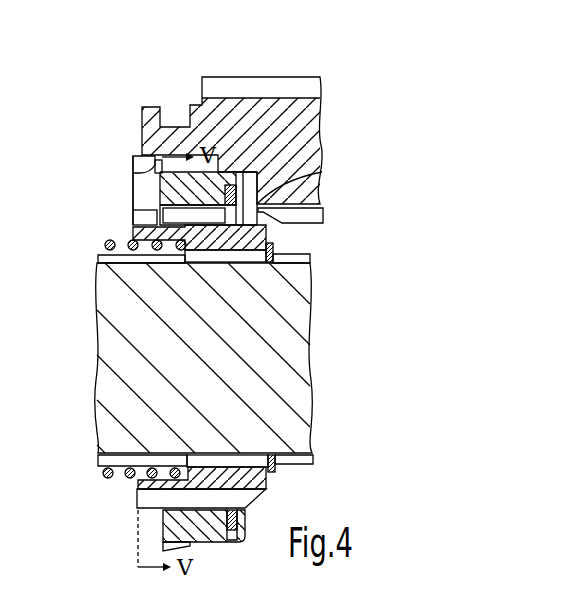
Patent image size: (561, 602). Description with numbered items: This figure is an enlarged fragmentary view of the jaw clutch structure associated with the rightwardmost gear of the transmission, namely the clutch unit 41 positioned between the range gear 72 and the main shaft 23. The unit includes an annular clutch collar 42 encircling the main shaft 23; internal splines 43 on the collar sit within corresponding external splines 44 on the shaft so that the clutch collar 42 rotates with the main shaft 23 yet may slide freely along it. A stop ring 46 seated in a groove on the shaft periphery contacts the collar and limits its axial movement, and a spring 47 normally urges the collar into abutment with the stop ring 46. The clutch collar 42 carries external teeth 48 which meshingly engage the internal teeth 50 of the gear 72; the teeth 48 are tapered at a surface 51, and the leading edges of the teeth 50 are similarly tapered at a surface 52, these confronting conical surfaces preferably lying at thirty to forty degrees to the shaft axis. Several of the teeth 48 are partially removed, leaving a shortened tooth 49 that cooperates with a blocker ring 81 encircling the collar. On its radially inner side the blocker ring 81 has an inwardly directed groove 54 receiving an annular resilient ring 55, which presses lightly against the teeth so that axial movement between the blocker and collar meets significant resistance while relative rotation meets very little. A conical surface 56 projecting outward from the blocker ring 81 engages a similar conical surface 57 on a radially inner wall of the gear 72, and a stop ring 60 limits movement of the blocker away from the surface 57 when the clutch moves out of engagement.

The main shaft 23 is at (117, 360).
The clutch unit 41 is at (112, 214).
The clutch collar 42 is at (133, 232).
The internal splines 43 is at (203, 257).
The external splines 44 is at (302, 258).
The stop ring 46 is at (273, 246).
The spring 47 is at (104, 244).
The external teeth 48 is at (131, 505).
The shortened tooth 49 is at (147, 217).
The internal teeth 50 is at (318, 215).
The tapered surface 51 is at (260, 491).
The tapered surface 52 is at (322, 172).
The groove 54 is at (205, 140).
The resilient ring 55 is at (238, 188).
The conical surface 56 is at (150, 158).
The conical surface 57 is at (157, 171).
The stop ring 60 is at (173, 176).
The range gear 72 is at (291, 73).
The blocker ring 81 is at (197, 183).